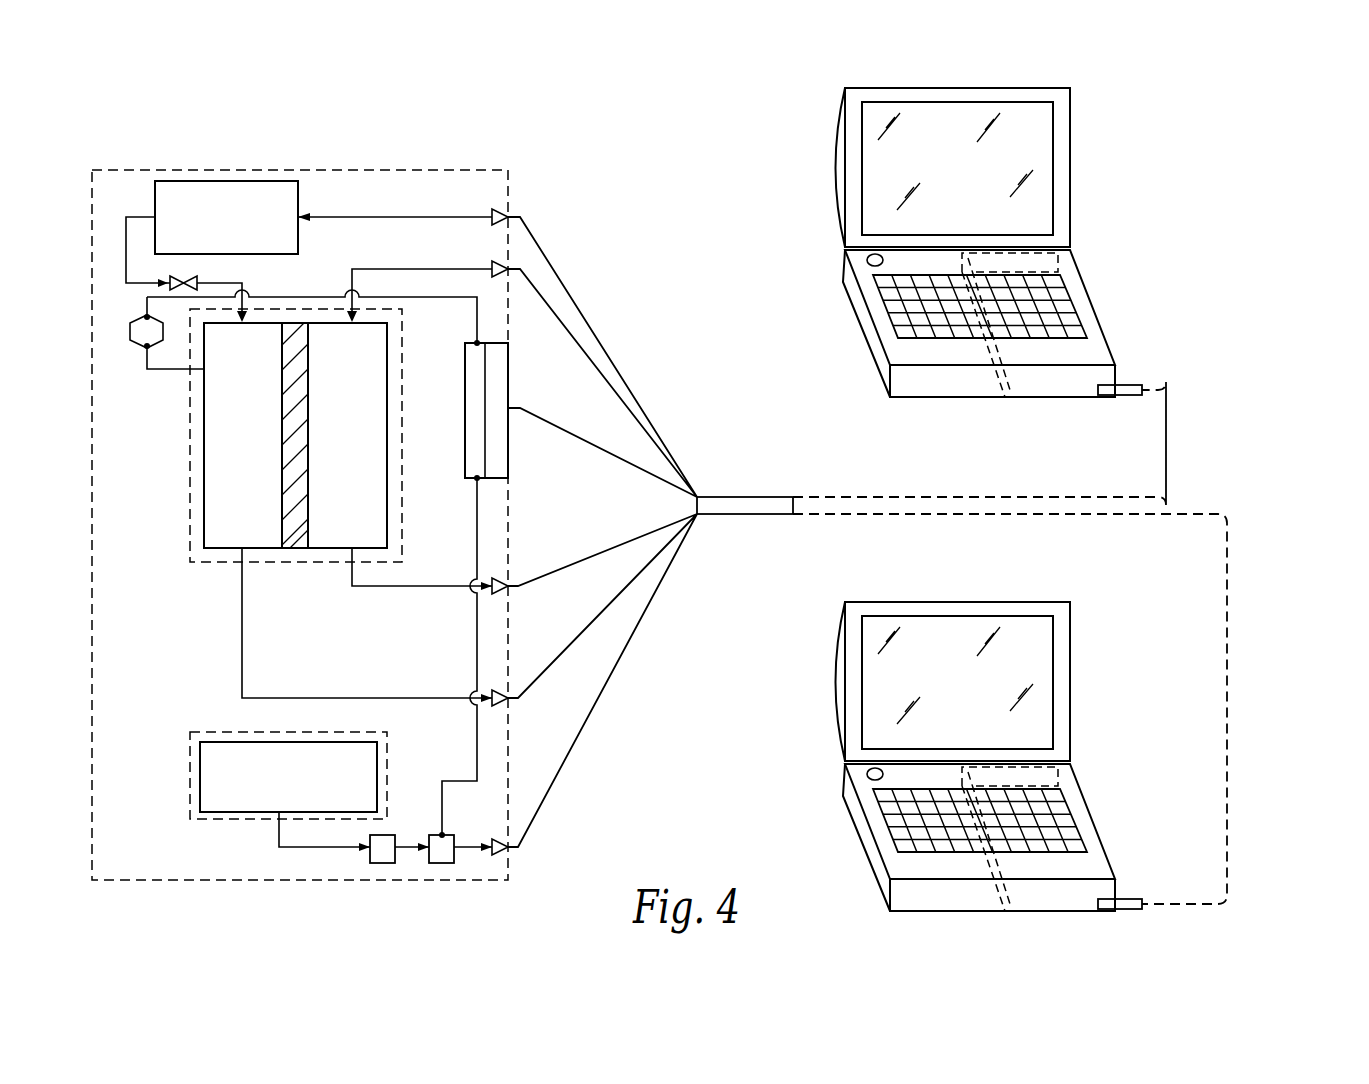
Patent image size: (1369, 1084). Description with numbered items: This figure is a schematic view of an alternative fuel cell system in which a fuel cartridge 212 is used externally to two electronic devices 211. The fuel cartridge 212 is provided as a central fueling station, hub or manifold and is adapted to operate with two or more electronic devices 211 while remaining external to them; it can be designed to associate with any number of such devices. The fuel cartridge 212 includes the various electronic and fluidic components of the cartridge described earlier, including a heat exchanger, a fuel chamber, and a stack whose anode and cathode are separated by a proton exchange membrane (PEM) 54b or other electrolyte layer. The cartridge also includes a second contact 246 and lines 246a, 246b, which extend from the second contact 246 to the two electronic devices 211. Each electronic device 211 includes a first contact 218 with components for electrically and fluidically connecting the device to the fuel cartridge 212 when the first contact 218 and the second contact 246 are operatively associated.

The electronic device 211 is at (1120, 180).
The fuel cartridge 212 is at (300, 558).
The first contact 218 is at (1133, 397).
The second contact 246 is at (750, 496).
The line 246a is at (968, 496).
The line 246b is at (1227, 543).
The proton exchange membrane (PEM) 54b is at (296, 551).